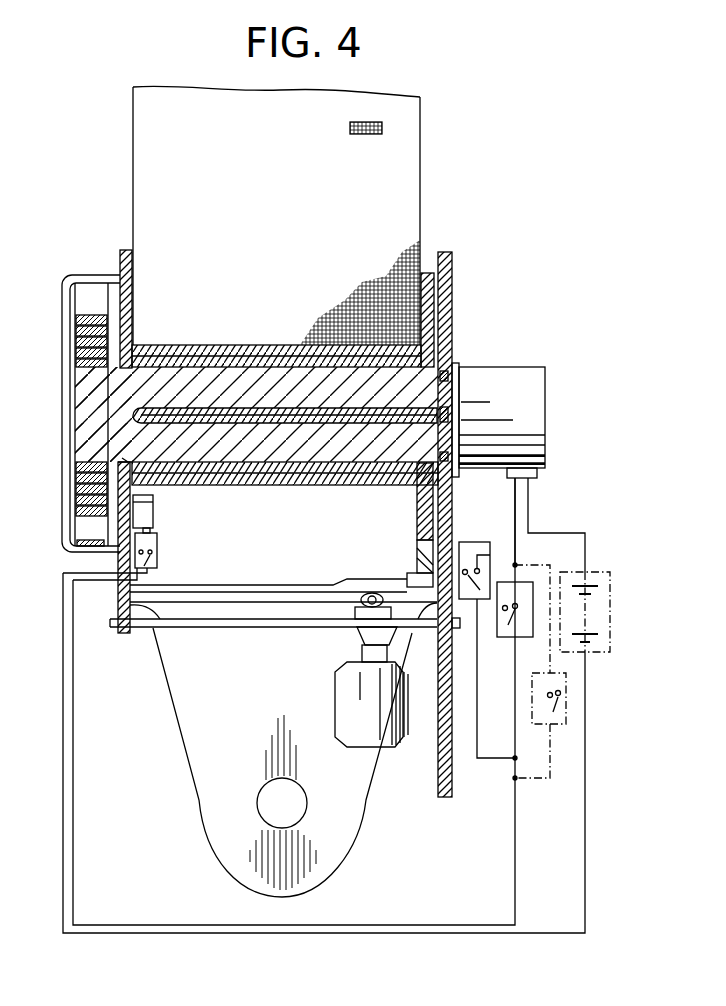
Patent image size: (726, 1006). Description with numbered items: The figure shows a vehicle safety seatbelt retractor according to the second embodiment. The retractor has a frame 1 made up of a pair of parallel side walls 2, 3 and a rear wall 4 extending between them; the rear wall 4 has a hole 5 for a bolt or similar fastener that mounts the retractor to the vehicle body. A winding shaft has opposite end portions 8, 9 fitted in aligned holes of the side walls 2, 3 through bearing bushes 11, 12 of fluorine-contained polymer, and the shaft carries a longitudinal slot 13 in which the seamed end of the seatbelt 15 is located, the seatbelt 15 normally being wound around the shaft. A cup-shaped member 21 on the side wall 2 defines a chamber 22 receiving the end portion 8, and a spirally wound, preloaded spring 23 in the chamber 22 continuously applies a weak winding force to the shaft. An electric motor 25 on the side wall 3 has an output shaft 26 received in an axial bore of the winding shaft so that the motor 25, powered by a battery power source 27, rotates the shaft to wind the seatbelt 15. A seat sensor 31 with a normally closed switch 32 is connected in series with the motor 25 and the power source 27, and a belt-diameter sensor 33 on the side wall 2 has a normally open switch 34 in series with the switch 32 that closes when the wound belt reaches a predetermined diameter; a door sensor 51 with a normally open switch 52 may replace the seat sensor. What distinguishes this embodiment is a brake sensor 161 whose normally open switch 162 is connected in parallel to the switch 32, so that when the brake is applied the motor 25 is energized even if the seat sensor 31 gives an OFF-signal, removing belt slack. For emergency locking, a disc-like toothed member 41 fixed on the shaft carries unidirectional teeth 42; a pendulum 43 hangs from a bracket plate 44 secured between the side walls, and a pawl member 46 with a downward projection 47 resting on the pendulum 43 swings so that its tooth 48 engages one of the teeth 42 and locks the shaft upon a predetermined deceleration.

The frame 1 is at (363, 837).
The side wall 2 is at (122, 251).
The side wall 3 is at (451, 252).
The rear wall 4 is at (223, 688).
The hole 5 is at (265, 812).
The end portion 8 is at (85, 430).
The end portion 9 is at (452, 378).
The bearing bush 11 is at (123, 460).
The bearing bush 12 is at (443, 455).
The longitudinal slot 13 is at (198, 412).
The seatbelt 15 is at (423, 128).
The cup-shaped member 21 is at (62, 398).
The chamber 22 is at (115, 309).
The spring 23 is at (77, 326).
The electric motor 25 is at (523, 368).
The output shaft 26 is at (443, 410).
The electric power source 27 is at (610, 628).
The seat sensor 31 is at (535, 640).
The normally closed switch 32 is at (513, 627).
The belt-diameter sensor 33 is at (157, 553).
The normally open switch 34 is at (123, 555).
The toothed member 41 is at (435, 488).
The unidirectional teeth 42 is at (417, 560).
The pendulum 43 is at (403, 742).
The bracket plate 44 is at (140, 632).
The pawl member 46 is at (343, 594).
The projection 47 is at (357, 607).
The tooth 48 is at (450, 548).
The door sensor 51 is at (568, 711).
The normally open switch 52 is at (554, 716).
The brake sensor 161 is at (493, 543).
The normally open switch 162 is at (517, 565).